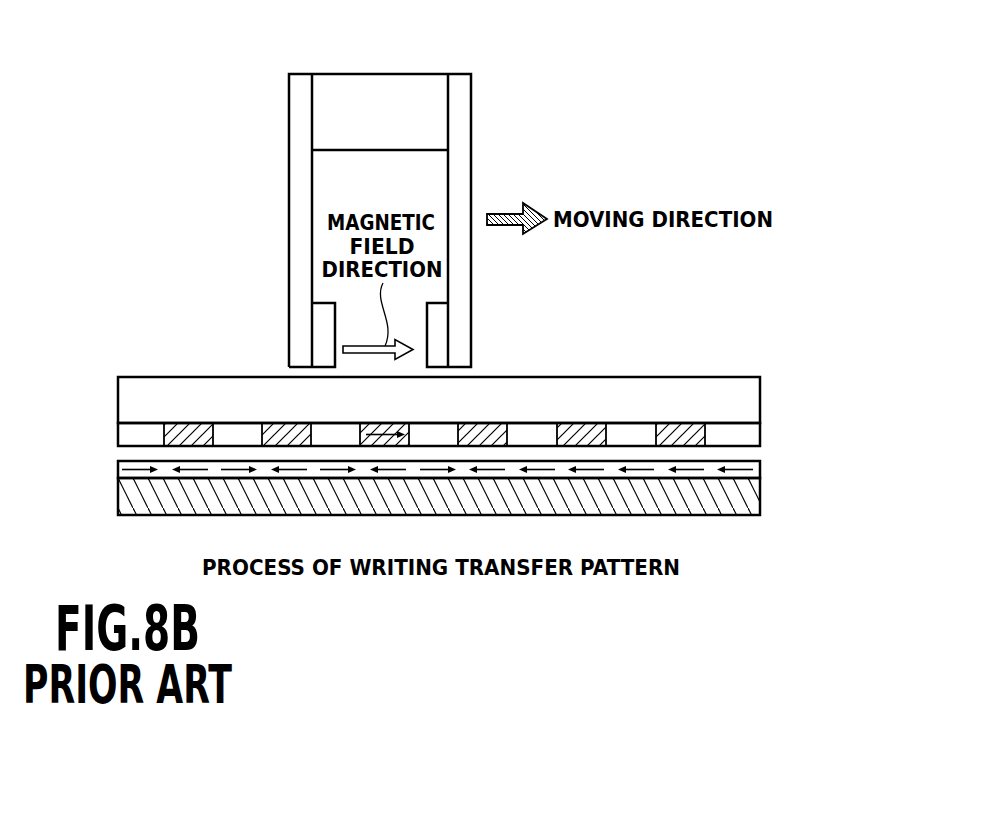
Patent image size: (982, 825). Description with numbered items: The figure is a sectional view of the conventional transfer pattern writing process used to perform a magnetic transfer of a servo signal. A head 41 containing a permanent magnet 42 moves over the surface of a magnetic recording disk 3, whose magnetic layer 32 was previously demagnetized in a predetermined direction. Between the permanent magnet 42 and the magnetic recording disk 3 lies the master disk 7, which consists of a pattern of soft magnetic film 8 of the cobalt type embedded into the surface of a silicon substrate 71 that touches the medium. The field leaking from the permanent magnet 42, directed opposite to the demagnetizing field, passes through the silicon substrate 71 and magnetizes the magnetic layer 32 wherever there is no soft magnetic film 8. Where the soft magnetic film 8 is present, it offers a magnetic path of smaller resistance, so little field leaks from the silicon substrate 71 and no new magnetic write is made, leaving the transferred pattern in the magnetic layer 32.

The magnetic recording disk 3 is at (761, 490).
The master disk 7 is at (477, 358).
The soft magnetic film 8 is at (597, 430).
The magnetic layer 32 is at (761, 465).
The head 41 is at (460, 110).
The permanent magnet 42 is at (380, 117).
The silicon substrate 71 is at (138, 390).